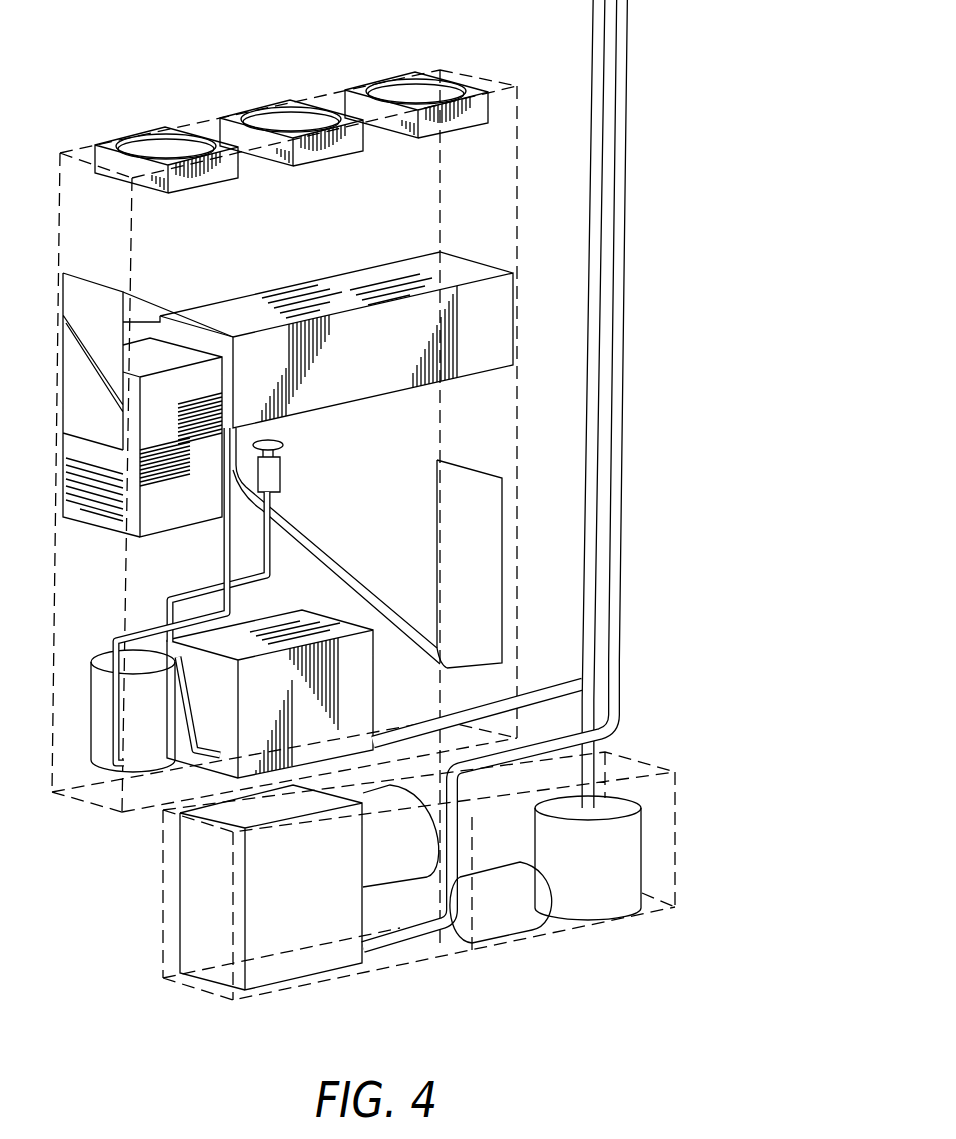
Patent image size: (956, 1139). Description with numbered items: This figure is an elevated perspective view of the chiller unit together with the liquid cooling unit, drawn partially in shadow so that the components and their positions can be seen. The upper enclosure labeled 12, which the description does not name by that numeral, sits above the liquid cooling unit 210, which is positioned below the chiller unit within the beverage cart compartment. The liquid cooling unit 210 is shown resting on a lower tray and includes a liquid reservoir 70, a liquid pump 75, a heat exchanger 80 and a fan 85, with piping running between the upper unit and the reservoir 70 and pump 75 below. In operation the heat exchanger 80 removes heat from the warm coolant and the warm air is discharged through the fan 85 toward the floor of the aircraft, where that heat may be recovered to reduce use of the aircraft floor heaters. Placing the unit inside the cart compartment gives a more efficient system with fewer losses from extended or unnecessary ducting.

The cooling system cabinet 12 is at (180, 100).
The liquid reservoir 70 is at (630, 873).
The liquid pump 75 is at (505, 917).
The heat exchanger 80 is at (213, 917).
The fan 85 is at (388, 860).
The liquid cooling unit 210 is at (185, 995).